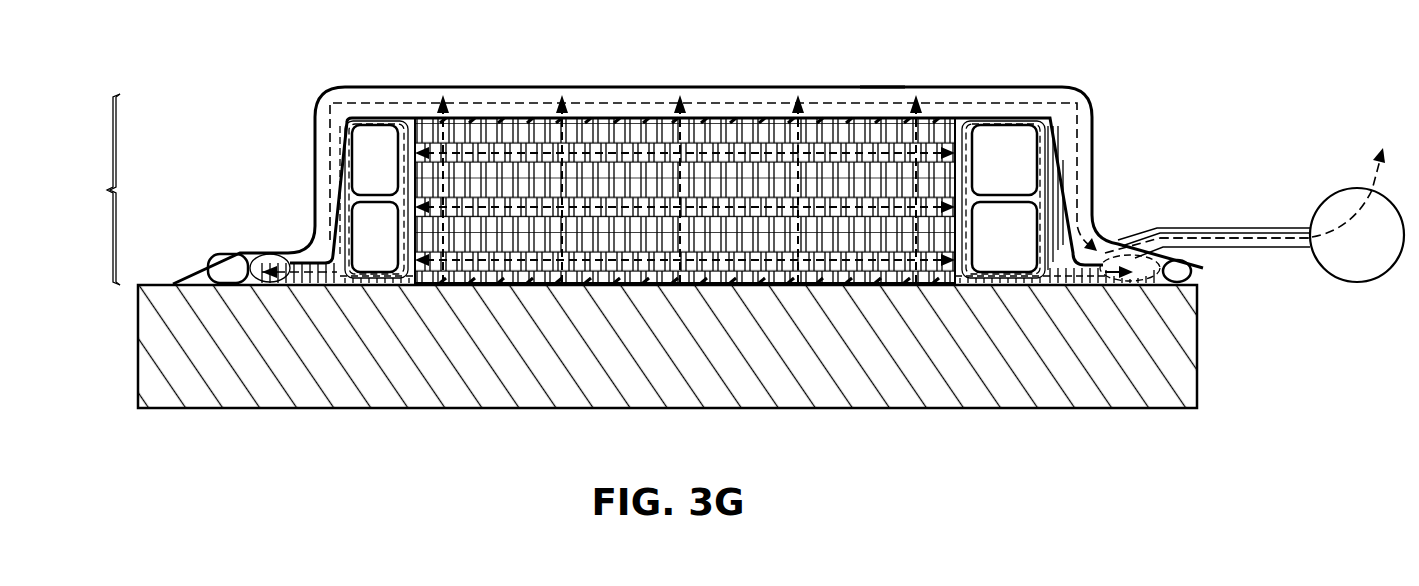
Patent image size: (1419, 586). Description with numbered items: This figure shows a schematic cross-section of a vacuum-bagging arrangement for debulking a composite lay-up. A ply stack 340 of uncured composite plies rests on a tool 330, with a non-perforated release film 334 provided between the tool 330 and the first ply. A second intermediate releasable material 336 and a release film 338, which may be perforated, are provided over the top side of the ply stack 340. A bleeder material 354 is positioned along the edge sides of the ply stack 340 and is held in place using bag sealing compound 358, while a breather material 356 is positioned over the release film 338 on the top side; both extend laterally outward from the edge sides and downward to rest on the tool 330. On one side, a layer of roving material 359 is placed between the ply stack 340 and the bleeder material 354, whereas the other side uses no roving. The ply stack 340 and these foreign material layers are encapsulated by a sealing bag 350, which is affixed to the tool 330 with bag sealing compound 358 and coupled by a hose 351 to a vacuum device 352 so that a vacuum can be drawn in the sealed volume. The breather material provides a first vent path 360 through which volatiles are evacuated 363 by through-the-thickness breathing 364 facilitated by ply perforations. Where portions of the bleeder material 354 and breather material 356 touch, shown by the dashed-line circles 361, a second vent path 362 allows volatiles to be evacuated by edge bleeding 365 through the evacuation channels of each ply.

The tool 330 is at (138, 320).
The non-perforated release film 334 is at (797, 283).
The second intermediate releasable material 336 is at (757, 120).
The release film 338 is at (1010, 120).
The ply stack 340 is at (86, 189).
The sealing bag 350 is at (613, 98).
The hose 351 is at (1192, 228).
The vacuum device 352 is at (1357, 282).
The bleeder material 354 is at (343, 190).
The breather material 356 is at (510, 98).
The bag sealing compound 358 is at (228, 265).
The roving material 359 is at (412, 120).
The first vent path 360 is at (863, 98).
The dashed-line circles 361 is at (280, 262).
The second vent path 362 is at (1042, 214).
The evacuation of volatiles 363 is at (1262, 237).
The through-the-thickness breathing arrows 364 is at (700, 150).
The edge bleeding arrows 365 is at (643, 283).